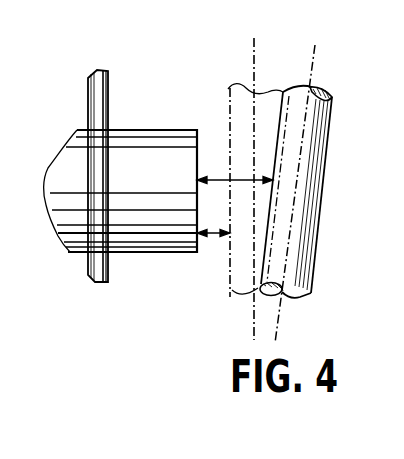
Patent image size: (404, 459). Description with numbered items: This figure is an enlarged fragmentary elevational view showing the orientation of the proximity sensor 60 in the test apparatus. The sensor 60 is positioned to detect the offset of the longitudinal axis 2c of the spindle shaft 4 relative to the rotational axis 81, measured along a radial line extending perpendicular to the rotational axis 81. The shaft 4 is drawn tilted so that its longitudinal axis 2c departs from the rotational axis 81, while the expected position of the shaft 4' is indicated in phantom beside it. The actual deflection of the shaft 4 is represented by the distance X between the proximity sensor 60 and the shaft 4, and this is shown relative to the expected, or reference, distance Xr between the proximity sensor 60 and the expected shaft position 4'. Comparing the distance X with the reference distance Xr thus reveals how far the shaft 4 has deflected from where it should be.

The proximity sensor 60 is at (153, 179).
The actual deflection X is at (223, 177).
The reference distance Xr is at (213, 238).
The expected position of the shaft 4' is at (245, 171).
The rotational axis 81 is at (256, 42).
The shaft 4 is at (310, 194).
The longitudinal axis 2c is at (311, 88).